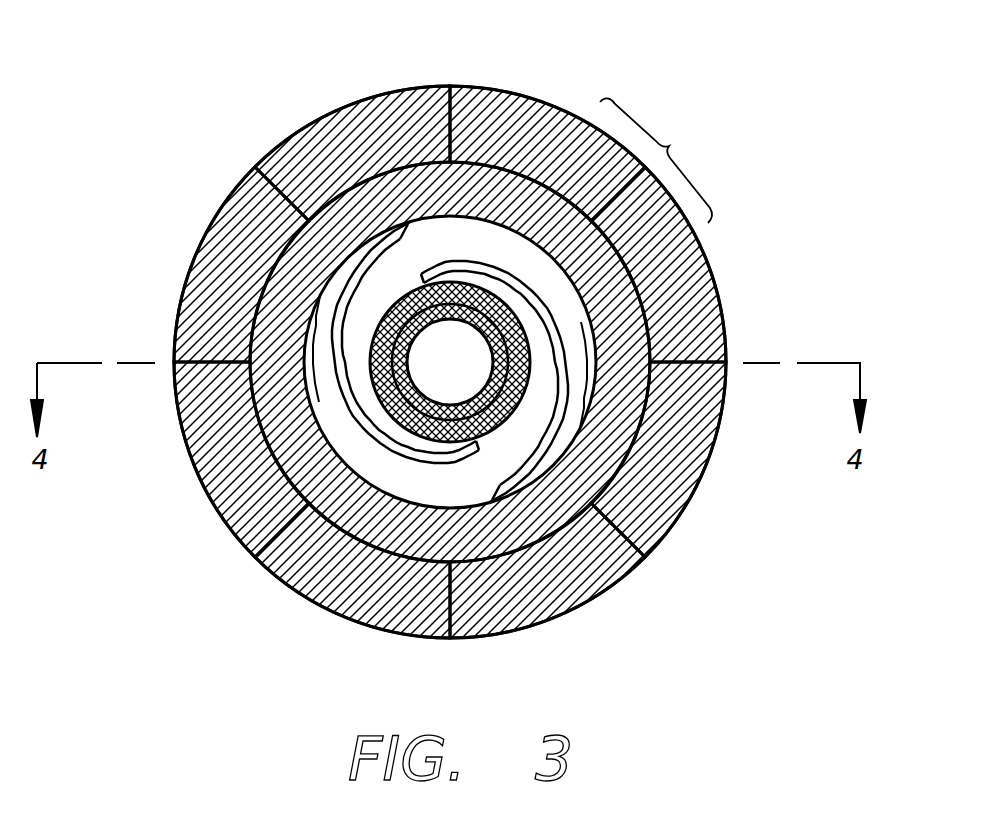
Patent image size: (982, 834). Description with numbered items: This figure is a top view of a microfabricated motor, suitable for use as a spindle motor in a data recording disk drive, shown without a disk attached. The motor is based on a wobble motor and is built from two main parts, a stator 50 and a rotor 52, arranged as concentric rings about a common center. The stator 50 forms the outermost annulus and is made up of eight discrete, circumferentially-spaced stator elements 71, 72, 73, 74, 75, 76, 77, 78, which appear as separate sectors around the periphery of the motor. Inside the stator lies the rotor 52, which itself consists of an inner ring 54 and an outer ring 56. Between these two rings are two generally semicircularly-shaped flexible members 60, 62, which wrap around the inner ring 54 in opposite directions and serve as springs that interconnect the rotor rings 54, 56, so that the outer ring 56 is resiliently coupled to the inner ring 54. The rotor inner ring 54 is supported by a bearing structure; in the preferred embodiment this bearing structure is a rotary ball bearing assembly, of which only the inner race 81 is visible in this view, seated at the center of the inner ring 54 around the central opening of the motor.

The stator 50 is at (658, 160).
The rotor 52 is at (392, 163).
The inner ring 54 is at (530, 343).
The outer ring 56 is at (630, 350).
The flexible member 60 is at (327, 303).
The flexible member 62 is at (580, 427).
The stator element 71 is at (205, 300).
The stator element 72 is at (300, 170).
The stator element 73 is at (505, 115).
The stator element 74 is at (693, 310).
The stator element 75 is at (700, 427).
The stator element 76 is at (613, 567).
The stator element 77 is at (283, 587).
The stator element 78 is at (205, 480).
The inner race 81 is at (417, 303).